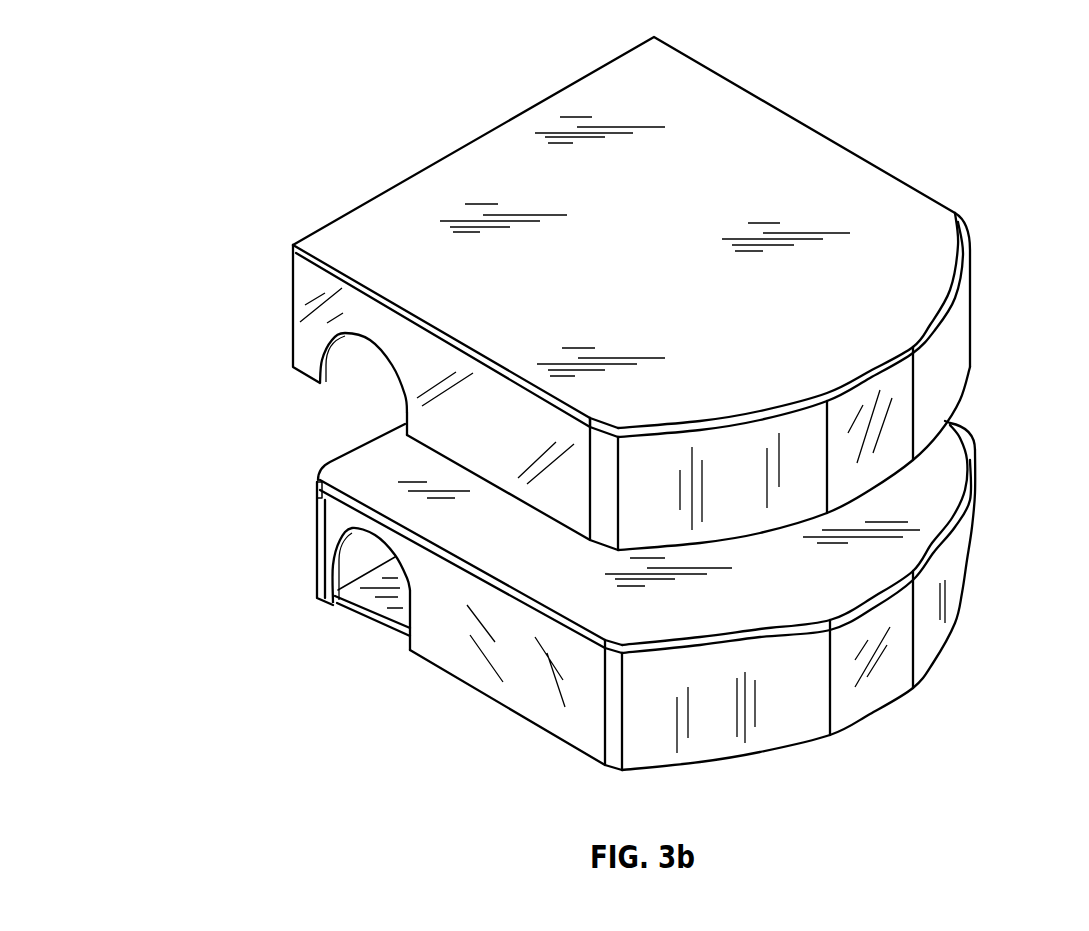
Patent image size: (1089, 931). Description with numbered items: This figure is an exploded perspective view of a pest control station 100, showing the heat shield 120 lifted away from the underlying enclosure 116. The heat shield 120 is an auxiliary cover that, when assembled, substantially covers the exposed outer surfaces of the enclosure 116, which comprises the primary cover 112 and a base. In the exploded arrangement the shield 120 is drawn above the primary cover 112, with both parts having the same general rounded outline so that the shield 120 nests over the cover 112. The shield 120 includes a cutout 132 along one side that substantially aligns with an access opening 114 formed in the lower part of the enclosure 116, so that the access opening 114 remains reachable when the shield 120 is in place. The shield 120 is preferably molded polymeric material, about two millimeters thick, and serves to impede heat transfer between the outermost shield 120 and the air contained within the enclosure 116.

The pest control station 100 is at (879, 95).
The primary cover 112 is at (458, 580).
The access opening 114 is at (367, 598).
The enclosure 116 is at (957, 573).
The heat shield 120 is at (290, 305).
The cutout 132 is at (347, 380).